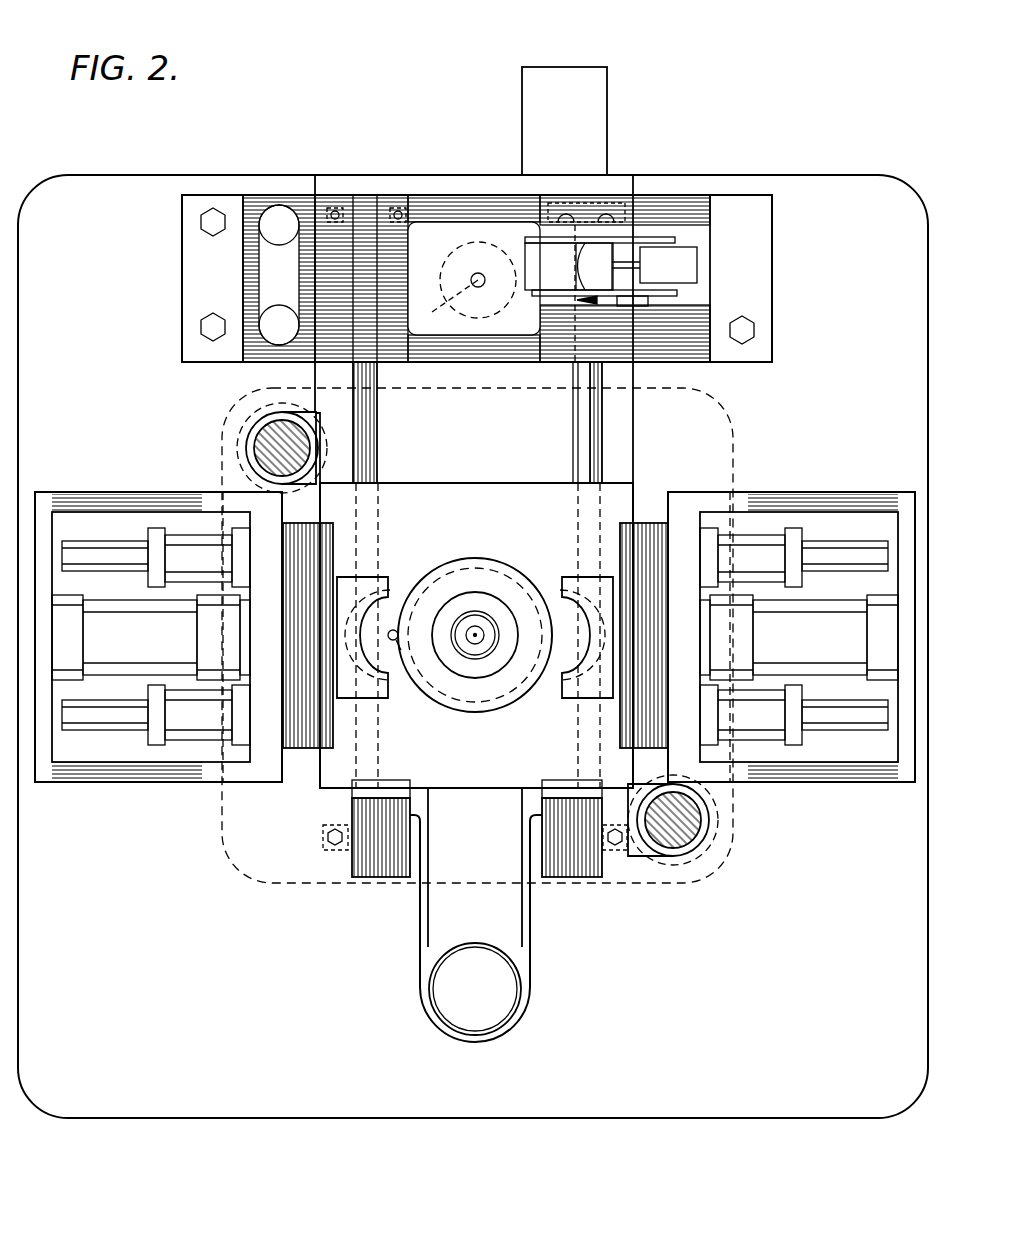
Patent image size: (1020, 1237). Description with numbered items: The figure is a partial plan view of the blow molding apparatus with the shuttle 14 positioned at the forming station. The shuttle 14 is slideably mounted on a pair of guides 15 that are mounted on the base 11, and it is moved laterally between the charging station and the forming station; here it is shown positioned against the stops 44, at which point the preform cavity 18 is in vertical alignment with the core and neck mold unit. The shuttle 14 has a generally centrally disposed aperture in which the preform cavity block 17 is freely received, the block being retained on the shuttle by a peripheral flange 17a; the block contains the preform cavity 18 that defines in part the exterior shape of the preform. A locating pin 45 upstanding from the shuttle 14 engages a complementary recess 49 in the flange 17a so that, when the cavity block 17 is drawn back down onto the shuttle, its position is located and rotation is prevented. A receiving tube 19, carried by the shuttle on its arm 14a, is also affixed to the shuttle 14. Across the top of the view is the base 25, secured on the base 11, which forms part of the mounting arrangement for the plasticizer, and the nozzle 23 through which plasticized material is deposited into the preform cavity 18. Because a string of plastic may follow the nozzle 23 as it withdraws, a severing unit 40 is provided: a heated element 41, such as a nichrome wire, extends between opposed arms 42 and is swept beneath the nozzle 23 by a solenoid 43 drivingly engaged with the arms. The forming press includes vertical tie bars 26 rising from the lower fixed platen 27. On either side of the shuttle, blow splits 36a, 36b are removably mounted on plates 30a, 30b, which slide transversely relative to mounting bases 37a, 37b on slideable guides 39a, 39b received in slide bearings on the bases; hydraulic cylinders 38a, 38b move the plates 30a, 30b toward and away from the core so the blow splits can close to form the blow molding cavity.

The base 11 is at (722, 1118).
The shuttle 14 is at (398, 483).
The carriage arm 14a is at (533, 930).
The guides 15 is at (573, 430).
The preform cavity block 17 is at (462, 585).
The peripheral flange 17a is at (490, 560).
The preform cavity 18 is at (478, 652).
The receiving tube 19 is at (520, 1025).
The nozzle 23 is at (468, 289).
The base 25 is at (385, 195).
The tie bars 26 is at (258, 445).
The lower fixed platen 27 is at (735, 426).
The plate 30a is at (303, 760).
The plate 30b is at (650, 522).
The blow split 36a is at (383, 700).
The blow split 36b is at (565, 700).
The mounting base 37a is at (215, 775).
The mounting base 37b is at (735, 778).
The hydraulic cylinder 38a is at (152, 640).
The hydraulic cylinder 38b is at (836, 640).
The slideable guides 39a is at (62, 556).
The slideable guides 39b is at (893, 540).
The severing unit 40 is at (660, 305).
The heated element 41 is at (527, 254).
The arms 42 is at (585, 263).
The solenoid 43 is at (690, 256).
The stops 44 is at (372, 878).
The locating pin 45 is at (395, 628).
The recess 49 is at (401, 650).